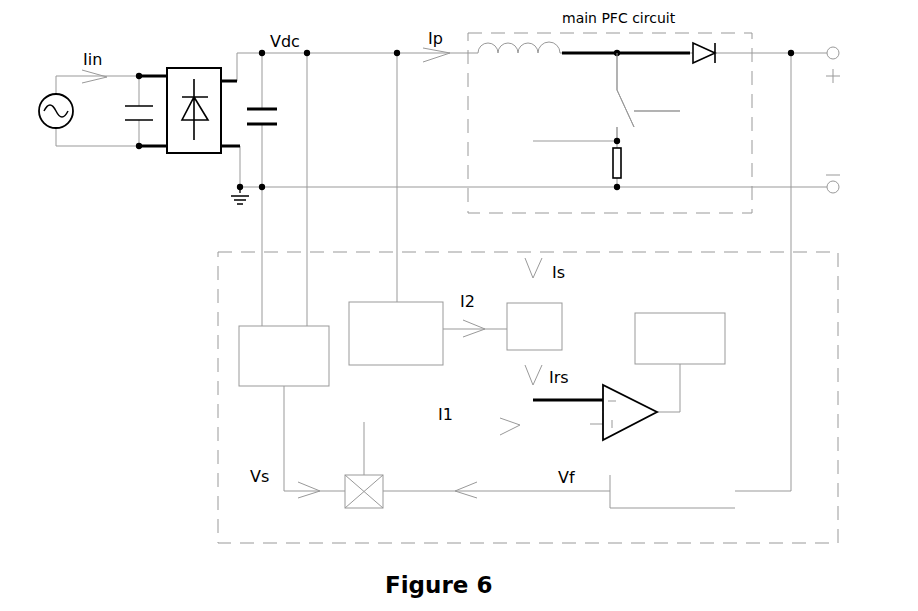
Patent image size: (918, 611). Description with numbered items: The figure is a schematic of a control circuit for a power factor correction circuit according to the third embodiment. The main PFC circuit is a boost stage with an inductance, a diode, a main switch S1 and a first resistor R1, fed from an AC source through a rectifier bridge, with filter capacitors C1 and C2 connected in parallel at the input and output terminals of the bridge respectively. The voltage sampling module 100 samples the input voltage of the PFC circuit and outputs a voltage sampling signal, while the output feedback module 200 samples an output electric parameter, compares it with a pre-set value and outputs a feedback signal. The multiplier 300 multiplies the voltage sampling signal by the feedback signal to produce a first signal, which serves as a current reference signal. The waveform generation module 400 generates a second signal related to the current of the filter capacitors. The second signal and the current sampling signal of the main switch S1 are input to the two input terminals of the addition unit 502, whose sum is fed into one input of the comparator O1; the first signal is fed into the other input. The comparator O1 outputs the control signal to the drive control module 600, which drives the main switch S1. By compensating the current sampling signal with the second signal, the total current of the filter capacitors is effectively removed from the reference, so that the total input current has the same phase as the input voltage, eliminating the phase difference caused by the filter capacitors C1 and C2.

The voltage sampling module 100 is at (284, 344).
The output feedback module 200 is at (672, 483).
The multiplier 300 is at (364, 503).
The waveform generation module 400 is at (396, 324).
The addition unit 502 is at (551, 326).
The drive control module 600 is at (680, 330).
The filter capacitor C1 is at (125, 110).
The filter capacitor C2 is at (257, 107).
The main switch S1 is at (631, 97).
The first resistor R1 is at (631, 163).
The comparator O1 is at (596, 418).